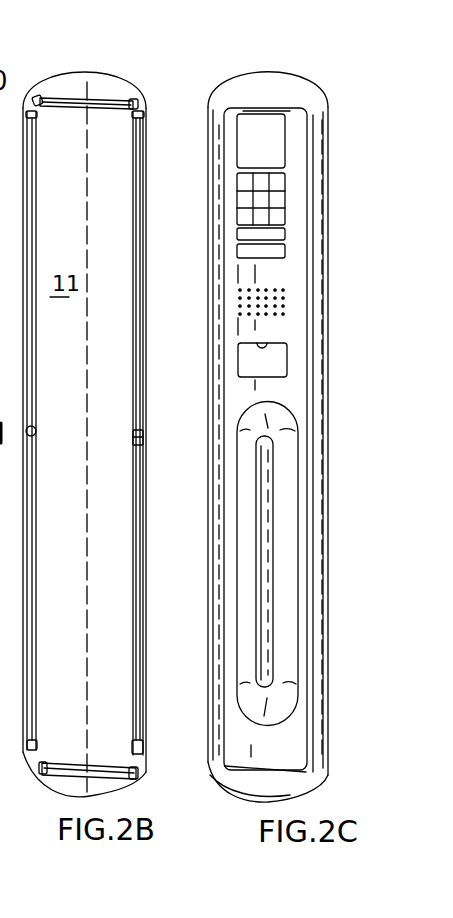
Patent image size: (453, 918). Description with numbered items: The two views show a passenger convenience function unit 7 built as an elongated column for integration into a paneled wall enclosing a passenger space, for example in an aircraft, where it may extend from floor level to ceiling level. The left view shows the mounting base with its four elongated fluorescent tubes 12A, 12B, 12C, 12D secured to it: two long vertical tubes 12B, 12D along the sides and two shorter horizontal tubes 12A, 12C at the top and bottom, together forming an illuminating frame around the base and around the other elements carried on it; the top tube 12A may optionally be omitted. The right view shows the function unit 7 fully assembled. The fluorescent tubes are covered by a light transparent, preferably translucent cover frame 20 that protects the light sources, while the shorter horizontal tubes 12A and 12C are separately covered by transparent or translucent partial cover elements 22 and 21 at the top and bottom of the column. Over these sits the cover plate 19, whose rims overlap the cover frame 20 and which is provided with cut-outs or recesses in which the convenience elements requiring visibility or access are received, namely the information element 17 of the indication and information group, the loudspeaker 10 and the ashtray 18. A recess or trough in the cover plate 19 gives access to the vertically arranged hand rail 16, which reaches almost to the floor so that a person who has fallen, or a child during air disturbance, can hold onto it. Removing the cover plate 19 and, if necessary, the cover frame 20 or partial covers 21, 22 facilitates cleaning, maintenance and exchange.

In FIG. 2B, the fluorescent tube 12A is at (105, 103).
In FIG. 2B, the fluorescent tube 12B is at (140, 144).
In FIG. 2B, the fluorescent tube 12C is at (67, 773).
In FIG. 2B, the fluorescent tube 12D is at (25, 752).
In FIG. 2C, the functional unit 7 is at (331, 93).
In FIG. 2C, the partial cover element 22 is at (257, 104).
In FIG. 2C, the element of the information group 17 is at (280, 210).
In FIG. 2C, the loudspeaker 10 is at (278, 305).
In FIG. 2C, the ashtray 18 is at (278, 366).
In FIG. 2C, the cover frame 20 is at (317, 447).
In FIG. 2C, the hand rail 16 is at (288, 585).
In FIG. 2C, the cover plate 19 is at (296, 746).
In FIG. 2C, the partial cover element 21 is at (302, 783).